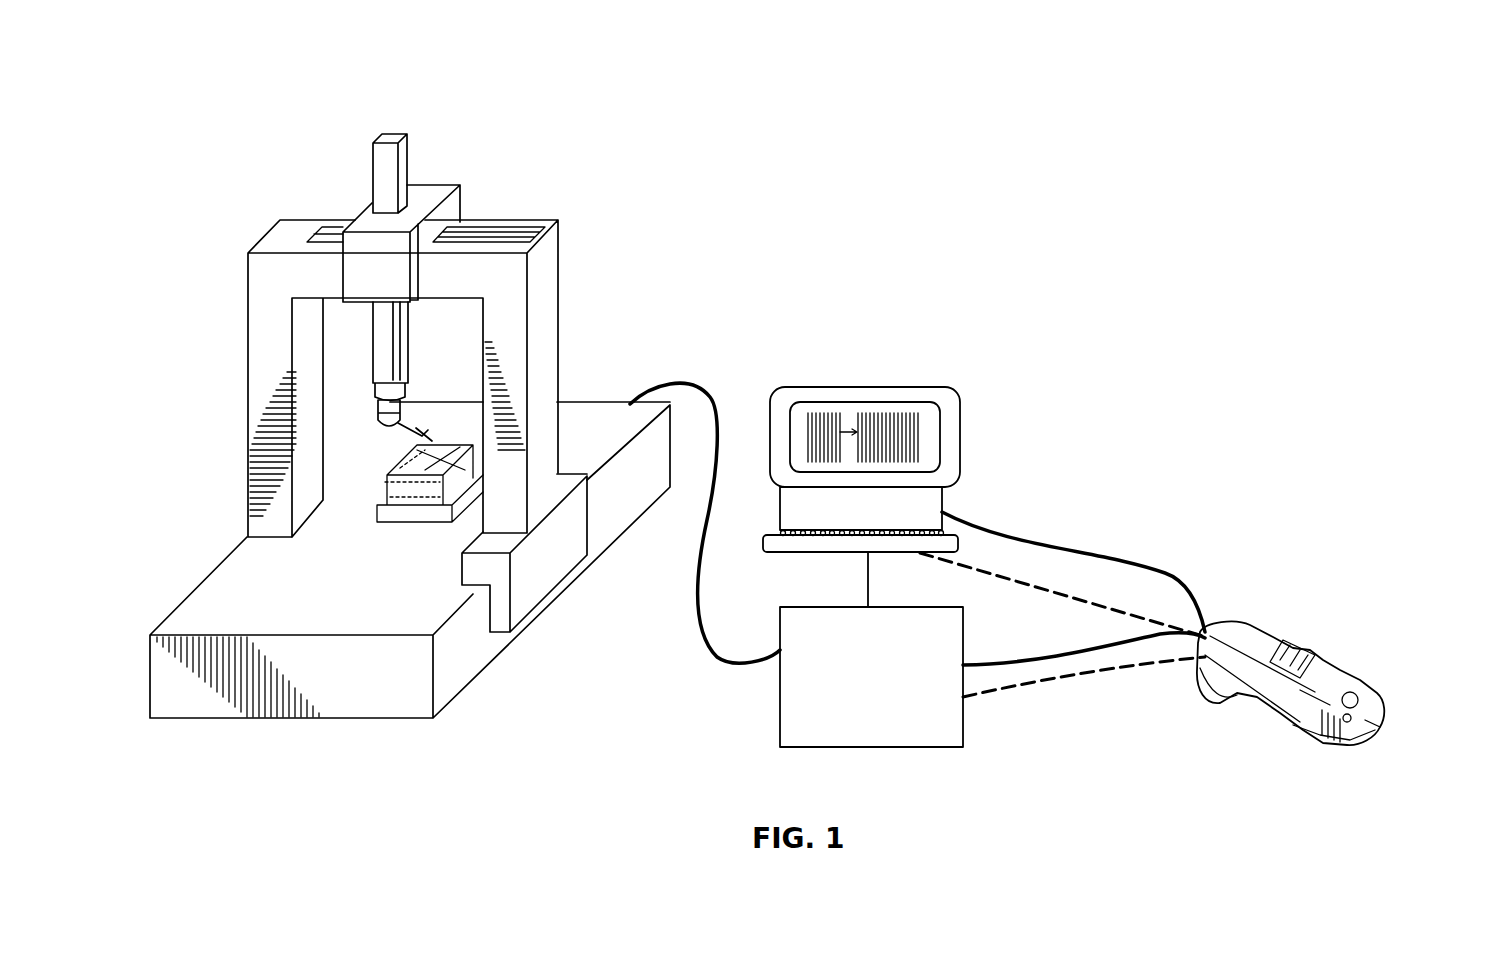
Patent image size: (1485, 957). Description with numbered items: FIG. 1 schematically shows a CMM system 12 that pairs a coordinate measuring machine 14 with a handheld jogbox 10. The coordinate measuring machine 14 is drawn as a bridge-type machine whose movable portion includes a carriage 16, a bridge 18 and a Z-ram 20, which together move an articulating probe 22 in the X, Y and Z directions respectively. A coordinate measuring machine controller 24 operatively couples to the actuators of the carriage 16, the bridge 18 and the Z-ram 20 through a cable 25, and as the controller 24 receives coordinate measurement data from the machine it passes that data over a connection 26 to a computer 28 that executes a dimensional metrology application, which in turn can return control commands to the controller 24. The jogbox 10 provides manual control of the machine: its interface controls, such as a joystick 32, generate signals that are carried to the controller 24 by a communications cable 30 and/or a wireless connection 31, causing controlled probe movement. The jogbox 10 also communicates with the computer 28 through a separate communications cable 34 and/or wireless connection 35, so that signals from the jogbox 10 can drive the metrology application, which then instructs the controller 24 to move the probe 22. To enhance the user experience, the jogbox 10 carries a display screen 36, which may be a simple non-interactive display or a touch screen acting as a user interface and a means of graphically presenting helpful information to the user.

The jogbox 10 is at (1375, 657).
The CMM system 12 is at (868, 185).
The coordinate measuring machine 14 is at (190, 320).
The carriage 16 is at (432, 186).
The bridge 18 is at (523, 240).
The Z-ram 20 is at (373, 328).
The articulating probe 22 is at (377, 433).
The coordinate measuring machine controller 24 is at (871, 677).
The cable 25 is at (690, 600).
The connection 26 is at (862, 578).
The computer 28 is at (945, 472).
The communications cable 30 is at (1100, 650).
The wireless connection 31 is at (1057, 680).
The joystick 32 is at (1320, 653).
The communications cable 34 is at (1102, 552).
The wireless connection 35 is at (988, 574).
The display screen 36 is at (1255, 628).